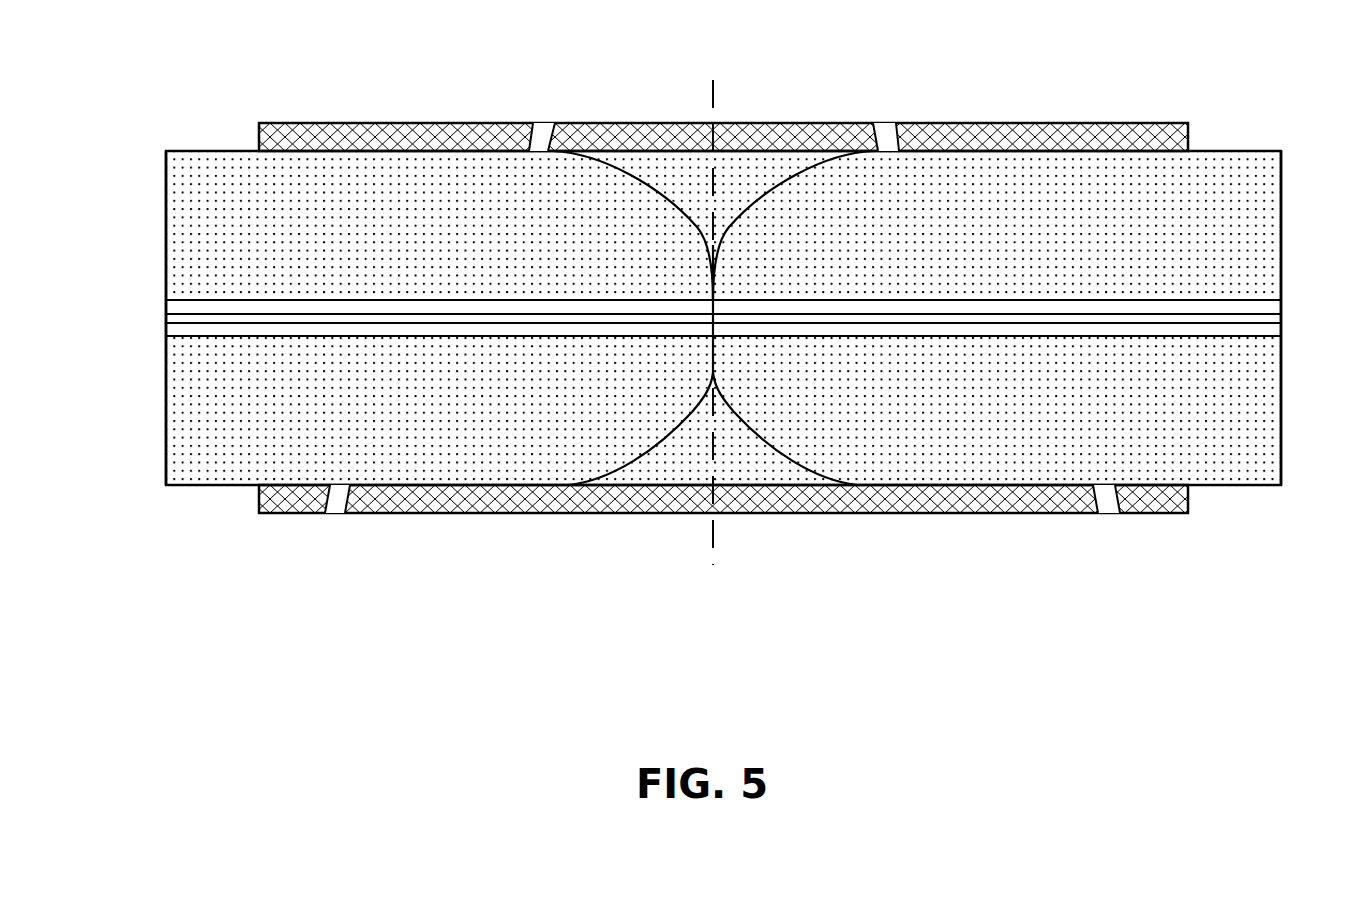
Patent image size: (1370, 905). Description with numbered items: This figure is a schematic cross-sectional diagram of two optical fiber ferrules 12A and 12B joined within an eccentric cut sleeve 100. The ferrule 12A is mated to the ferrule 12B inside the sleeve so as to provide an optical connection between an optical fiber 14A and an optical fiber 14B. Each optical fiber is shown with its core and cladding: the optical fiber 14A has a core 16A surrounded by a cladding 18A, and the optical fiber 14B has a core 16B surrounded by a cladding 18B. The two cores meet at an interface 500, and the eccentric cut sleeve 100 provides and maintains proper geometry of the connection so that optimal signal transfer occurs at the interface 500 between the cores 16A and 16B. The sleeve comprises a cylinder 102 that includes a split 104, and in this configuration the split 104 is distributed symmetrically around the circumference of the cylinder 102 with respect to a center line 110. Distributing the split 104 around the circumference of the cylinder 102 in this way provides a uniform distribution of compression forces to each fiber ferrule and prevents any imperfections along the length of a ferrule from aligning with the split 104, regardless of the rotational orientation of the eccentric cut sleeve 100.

The eccentric cut sleeve 100 is at (406, 108).
The cylinder 102 is at (758, 123).
The split 104 is at (545, 127).
The center line 110 is at (717, 341).
The interface 500 is at (705, 300).
The optical fiber ferrule 12A is at (166, 212).
The optical fiber ferrule 12B is at (1281, 212).
The optical fiber 14A is at (153, 309).
The optical fiber 14B is at (1295, 309).
The core 16A is at (238, 318).
The core 16B is at (1205, 313).
The cladding 18A is at (178, 337).
The cladding 18B is at (1260, 331).